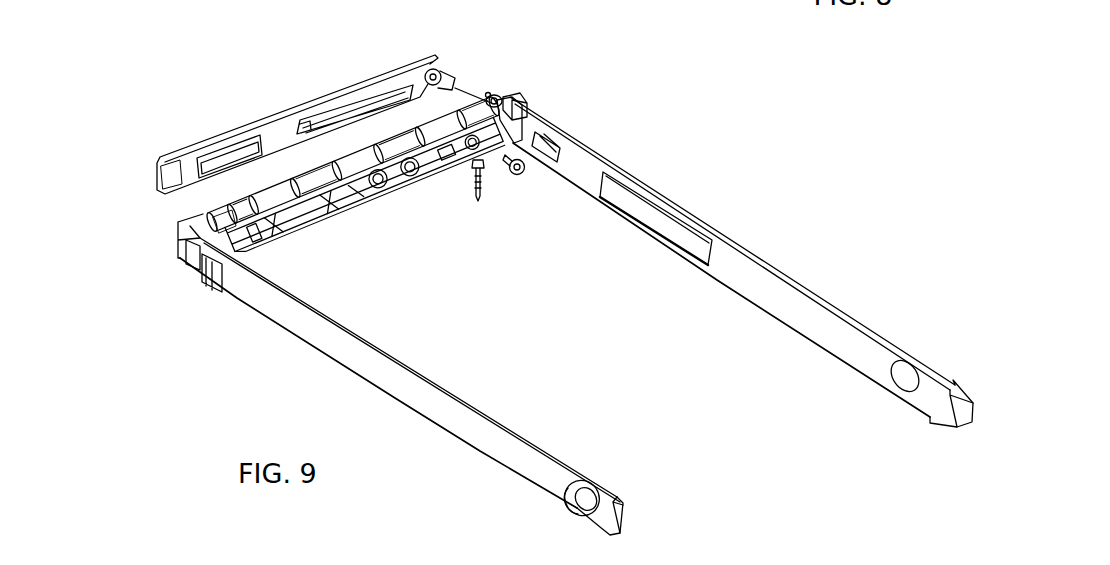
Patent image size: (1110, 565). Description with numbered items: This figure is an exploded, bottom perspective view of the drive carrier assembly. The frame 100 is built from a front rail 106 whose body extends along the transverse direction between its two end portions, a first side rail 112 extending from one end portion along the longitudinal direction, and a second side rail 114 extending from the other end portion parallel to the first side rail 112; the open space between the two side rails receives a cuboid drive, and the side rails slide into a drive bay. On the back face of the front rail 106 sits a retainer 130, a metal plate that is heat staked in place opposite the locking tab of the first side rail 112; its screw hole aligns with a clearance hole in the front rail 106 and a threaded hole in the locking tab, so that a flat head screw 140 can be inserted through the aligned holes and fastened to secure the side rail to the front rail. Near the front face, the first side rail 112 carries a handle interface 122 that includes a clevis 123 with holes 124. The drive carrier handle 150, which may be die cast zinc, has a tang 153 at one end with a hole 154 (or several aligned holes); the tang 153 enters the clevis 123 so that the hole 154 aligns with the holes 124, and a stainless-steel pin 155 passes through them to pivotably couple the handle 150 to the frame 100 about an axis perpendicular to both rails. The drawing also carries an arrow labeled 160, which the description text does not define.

The frame 100 is at (571, 302).
The front rail 106 is at (215, 206).
The first side rail 112 is at (588, 153).
The second side rail 114 is at (310, 325).
The handle interface 122 is at (485, 88).
The clevis 123 is at (497, 97).
The holes 124 is at (503, 97).
The retainer 130 is at (326, 136).
The flat head screw 140 is at (518, 165).
The drive carrier handle 150 is at (306, 97).
The tang 153 is at (432, 62).
The hole 154 is at (412, 72).
The pin 155 is at (473, 205).
The pivot direction arrow 160 is at (718, 167).